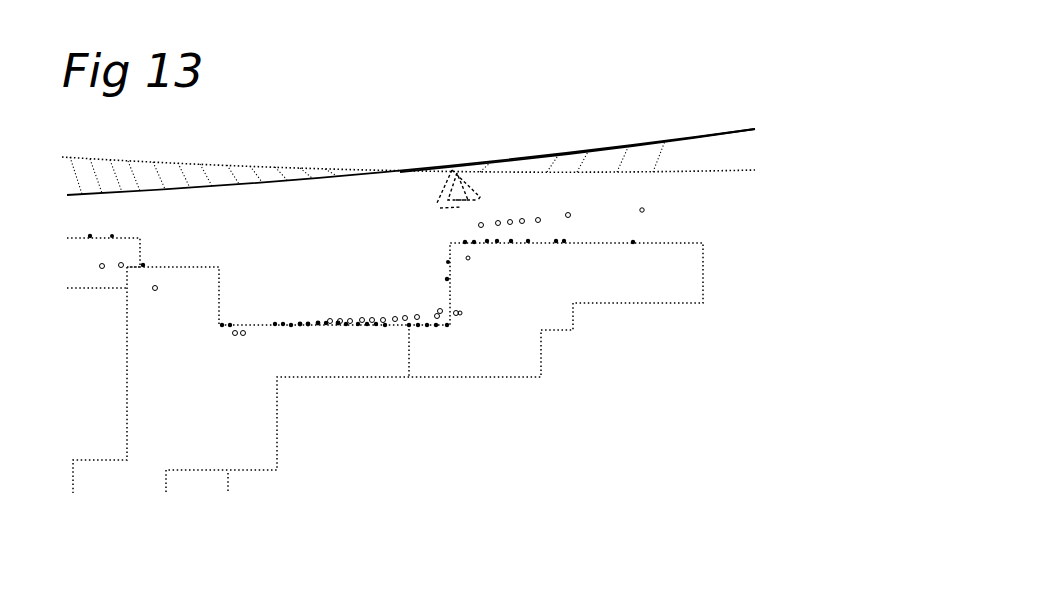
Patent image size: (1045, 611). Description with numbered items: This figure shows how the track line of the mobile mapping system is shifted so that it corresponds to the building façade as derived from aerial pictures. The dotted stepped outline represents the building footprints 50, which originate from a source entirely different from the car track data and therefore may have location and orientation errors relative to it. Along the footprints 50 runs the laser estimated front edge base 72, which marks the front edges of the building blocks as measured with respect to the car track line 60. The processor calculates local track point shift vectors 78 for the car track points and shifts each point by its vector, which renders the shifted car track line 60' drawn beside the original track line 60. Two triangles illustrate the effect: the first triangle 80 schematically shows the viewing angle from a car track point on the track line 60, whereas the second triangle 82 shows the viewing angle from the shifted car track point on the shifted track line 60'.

The building footprints 50 is at (432, 378).
The track line 60 is at (577, 134).
The shifted car track line 60' is at (408, 158).
The laser estimated front edge base 72 is at (378, 320).
The local track point shift vectors 78 is at (657, 152).
The first triangle 80 is at (478, 196).
The second triangle 82 is at (441, 206).